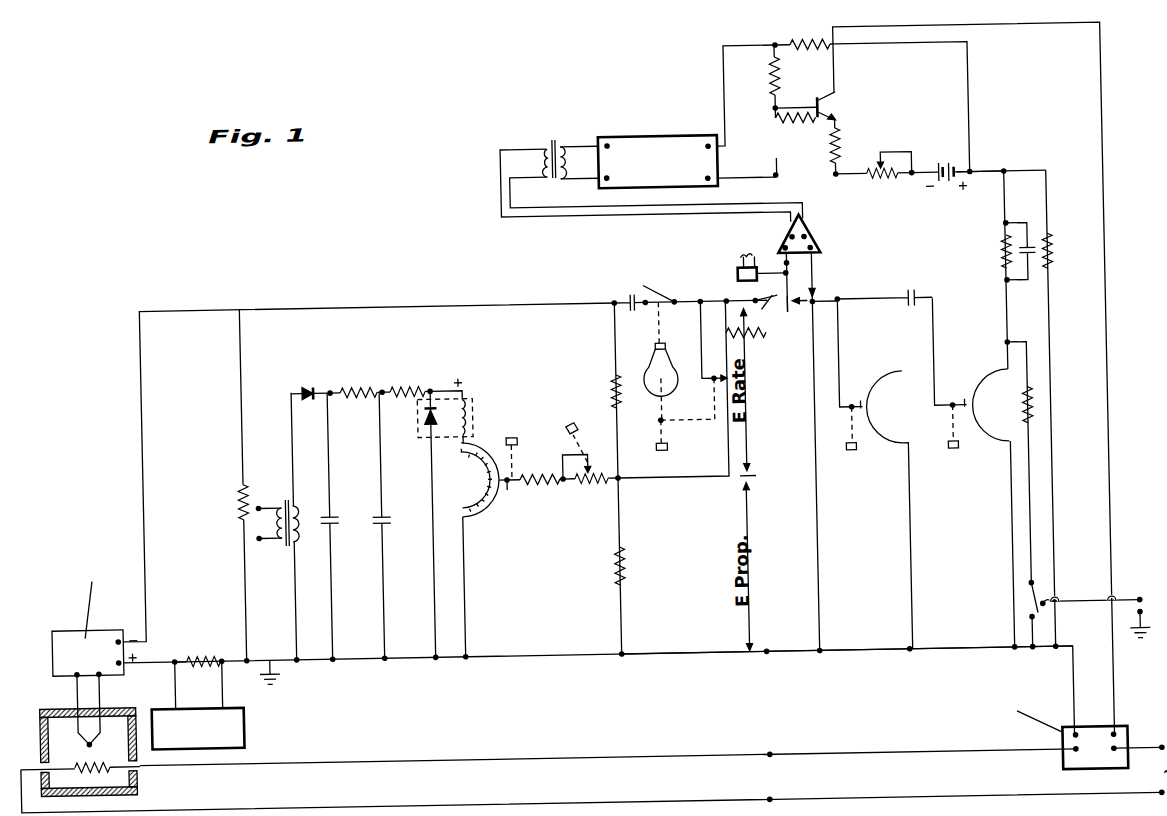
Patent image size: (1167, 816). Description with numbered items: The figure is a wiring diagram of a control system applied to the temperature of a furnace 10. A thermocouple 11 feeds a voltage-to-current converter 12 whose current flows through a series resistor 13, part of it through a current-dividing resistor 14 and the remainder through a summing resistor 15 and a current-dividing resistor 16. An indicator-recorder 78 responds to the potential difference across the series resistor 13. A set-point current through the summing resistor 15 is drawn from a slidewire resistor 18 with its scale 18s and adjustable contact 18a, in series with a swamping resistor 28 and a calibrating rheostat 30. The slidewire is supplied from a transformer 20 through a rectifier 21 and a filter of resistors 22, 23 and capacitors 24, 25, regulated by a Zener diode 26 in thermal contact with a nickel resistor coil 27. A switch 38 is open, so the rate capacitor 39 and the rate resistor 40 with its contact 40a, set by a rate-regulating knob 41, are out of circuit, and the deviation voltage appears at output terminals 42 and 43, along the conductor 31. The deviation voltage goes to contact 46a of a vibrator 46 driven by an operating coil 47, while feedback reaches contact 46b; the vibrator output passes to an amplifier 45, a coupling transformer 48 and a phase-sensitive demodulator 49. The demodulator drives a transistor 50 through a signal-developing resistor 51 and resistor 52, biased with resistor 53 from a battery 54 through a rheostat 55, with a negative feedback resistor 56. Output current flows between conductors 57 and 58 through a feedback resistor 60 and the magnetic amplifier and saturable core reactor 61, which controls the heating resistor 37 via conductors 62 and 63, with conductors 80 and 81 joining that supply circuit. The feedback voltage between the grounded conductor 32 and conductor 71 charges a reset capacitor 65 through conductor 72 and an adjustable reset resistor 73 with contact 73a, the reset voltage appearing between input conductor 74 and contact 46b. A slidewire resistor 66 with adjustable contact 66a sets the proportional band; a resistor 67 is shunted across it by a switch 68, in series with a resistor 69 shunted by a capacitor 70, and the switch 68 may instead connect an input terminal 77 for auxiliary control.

The furnace 10 is at (21, 715).
The thermocouple 11 is at (78, 722).
The voltage-to-current converter 12 is at (49, 630).
The series resistor 13 is at (186, 646).
The current-dividing resistor 14 is at (235, 489).
The summing resistor 15 is at (615, 566).
The current-dividing resistor 16 is at (610, 383).
The slidewire resistor 18 is at (481, 514).
The scale 18s is at (482, 445).
The adjustable contact 18a is at (514, 485).
The transformer 20 is at (281, 501).
The rectifier 21 is at (305, 381).
The filter resistor 22 is at (350, 385).
The filter resistor 23 is at (410, 384).
The filter capacitor 24 is at (340, 511).
The filter capacitor 25 is at (377, 521).
The Zener diode 26 is at (424, 411).
The nickel resistor coil 27 is at (474, 395).
The resistor 28 is at (533, 468).
The rheostat 30 is at (590, 483).
The conductor 31 is at (678, 480).
The grounded conductor 32 is at (677, 651).
The heating resistor 37 is at (106, 763).
The switch 38 is at (672, 294).
The rate capacitor 39 is at (632, 298).
The rate resistor 40 is at (729, 348).
The contact 40a is at (708, 380).
The rate-regulating knob 41 is at (671, 448).
The output terminal 42 is at (756, 300).
The output terminal 43 is at (765, 653).
The amplifier 45 is at (821, 244).
The vibrator 46 is at (795, 299).
The stationary contact 46a is at (777, 306).
The stationary contact 46b is at (809, 311).
The operating coil 47 is at (736, 269).
The coupling transformer 48 is at (559, 138).
The demodulator 49 is at (655, 133).
The transistor 50 is at (823, 121).
The signal-developing resistor 51 is at (777, 154).
The resistor 52 is at (779, 78).
The resistor 53 is at (804, 45).
The constant voltage source 54 is at (954, 166).
The rheostat 55 is at (889, 182).
The negative feedback resistor 56 is at (845, 144).
The output conductor 57 is at (1044, 33).
The output conductor 58 is at (991, 177).
The feedback resistor 60 is at (1054, 250).
The magnetic amplifier and saturable core reactor 61 is at (1124, 745).
The conductor 62 is at (871, 756).
The conductor 63 is at (861, 800).
The reset capacitor 65 is at (919, 295).
The slidewire resistor 66 is at (985, 440).
The adjustable contact 66a is at (967, 406).
The resistor 67 is at (1024, 405).
The switch 68 is at (1025, 600).
The resistor 69 is at (1007, 257).
The capacitor 70 is at (1037, 250).
The conductor 71 is at (939, 314).
The conductor 72 is at (817, 306).
The reset resistor 73 is at (886, 435).
The contact 73a is at (860, 405).
The input conductor 74 is at (819, 534).
The input terminal 77 is at (1137, 609).
The indicator-recorder 78 is at (240, 720).
The conductor 80 is at (763, 752).
The conductor 81 is at (762, 798).